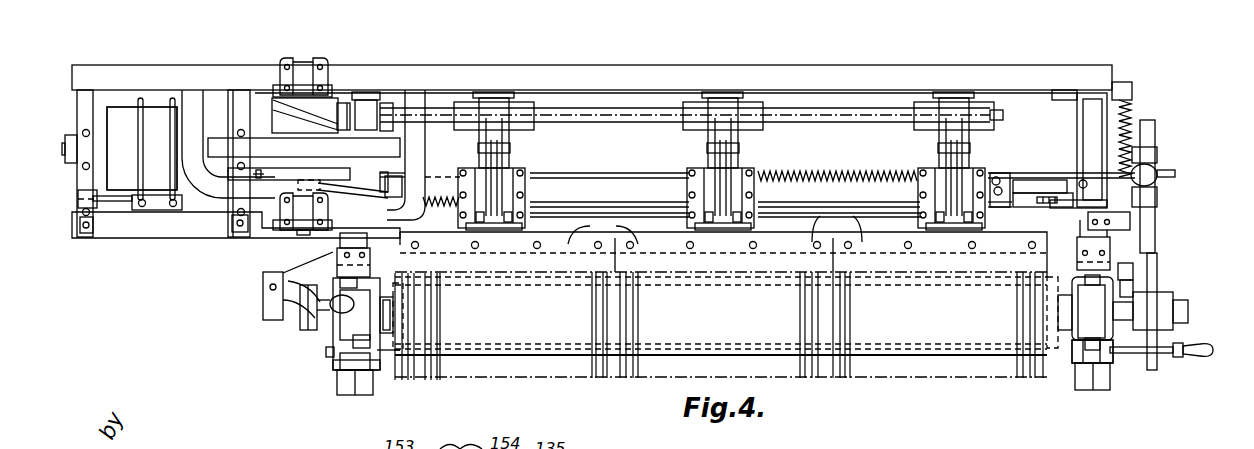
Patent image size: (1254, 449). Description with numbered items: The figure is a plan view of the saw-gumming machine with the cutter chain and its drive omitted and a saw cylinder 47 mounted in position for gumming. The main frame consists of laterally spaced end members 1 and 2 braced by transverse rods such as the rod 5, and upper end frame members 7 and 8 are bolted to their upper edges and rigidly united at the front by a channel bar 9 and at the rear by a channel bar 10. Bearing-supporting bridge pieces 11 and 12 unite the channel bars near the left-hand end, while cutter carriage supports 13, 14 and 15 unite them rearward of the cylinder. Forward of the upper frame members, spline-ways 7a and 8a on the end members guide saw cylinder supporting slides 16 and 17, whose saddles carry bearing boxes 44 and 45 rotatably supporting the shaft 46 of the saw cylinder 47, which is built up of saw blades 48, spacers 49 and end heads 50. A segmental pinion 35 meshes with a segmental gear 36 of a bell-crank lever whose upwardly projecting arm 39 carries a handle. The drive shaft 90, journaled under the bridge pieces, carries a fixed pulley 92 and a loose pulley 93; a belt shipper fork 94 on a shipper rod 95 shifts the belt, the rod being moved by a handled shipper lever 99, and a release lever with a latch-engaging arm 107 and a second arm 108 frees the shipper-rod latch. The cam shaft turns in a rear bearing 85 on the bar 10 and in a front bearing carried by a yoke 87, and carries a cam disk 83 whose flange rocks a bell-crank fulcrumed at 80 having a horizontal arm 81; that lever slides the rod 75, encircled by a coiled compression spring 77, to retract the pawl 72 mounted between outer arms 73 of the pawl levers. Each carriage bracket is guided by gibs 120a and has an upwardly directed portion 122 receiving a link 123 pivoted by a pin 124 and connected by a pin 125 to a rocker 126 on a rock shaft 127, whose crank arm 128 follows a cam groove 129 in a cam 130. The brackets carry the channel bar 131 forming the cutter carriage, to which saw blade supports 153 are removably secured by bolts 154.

The end member 1 is at (1107, 379).
The end member 2 is at (342, 386).
The transverse rod 5 is at (536, 33).
The upper end frame member 7 is at (1095, 106).
The spline-way 7a is at (1094, 380).
The upper end frame member 8 is at (373, 90).
The spline-way 8a is at (355, 384).
The channel bar 9 is at (218, 232).
The channel bar 10 is at (1007, 70).
The bridge piece 11 is at (83, 107).
The bridge piece 12 is at (237, 100).
The cutter carriage support 13 is at (514, 160).
The cutter carriage support 14 is at (744, 158).
The cutter carriage support 15 is at (970, 160).
The saw cylinder supporting slide 16 is at (1075, 365).
The saw cylinder supporting slide 17 is at (338, 361).
The segmental pinion 35 is at (300, 333).
The segmental gear 36 is at (285, 321).
The bell-crank lever arm 39 is at (316, 343).
The bearing box 44 is at (1092, 300).
The bearing box 45 is at (355, 318).
The saw cylinder shaft 46 is at (1182, 298).
The saw cylinder 47 is at (843, 387).
The saw blades 48 is at (604, 378).
The spacers 49 is at (437, 331).
The heads 50 is at (398, 350).
The pawl 72 is at (1152, 158).
The outer arms 73 is at (1163, 180).
The rod 75 is at (668, 176).
The coiled compression spring 77 is at (862, 177).
The fulcrum 80 is at (393, 196).
The horizontal arm 81 is at (362, 194).
The cam disk 83 is at (275, 168).
The rear bearing 85 is at (315, 58).
The yoke 87 is at (220, 200).
The drive shaft 90 is at (178, 140).
The fixed pulley 92 is at (142, 148).
The loose pulley 93 is at (142, 148).
The belt shipper fork 94 is at (160, 203).
The shipper rod 95 is at (122, 203).
The shipper lever 99 is at (1083, 180).
The latch-engaging arm 107 is at (1015, 180).
The release lever arm 108 is at (996, 176).
The gibs 120a is at (460, 184).
The upwardly directed portion 122 is at (756, 191).
The link 123 is at (700, 158).
The pin 124 is at (693, 215).
The pin 125 is at (745, 147).
The rocker 126 is at (712, 138).
The rock shaft 127 is at (620, 118).
The crank arm 128 is at (347, 103).
The cam groove 129 is at (270, 112).
The cam 130 is at (275, 118).
The channel bar 131 is at (868, 237).
The saw blade support 153 is at (603, 227).
The bolts 154 is at (837, 227).